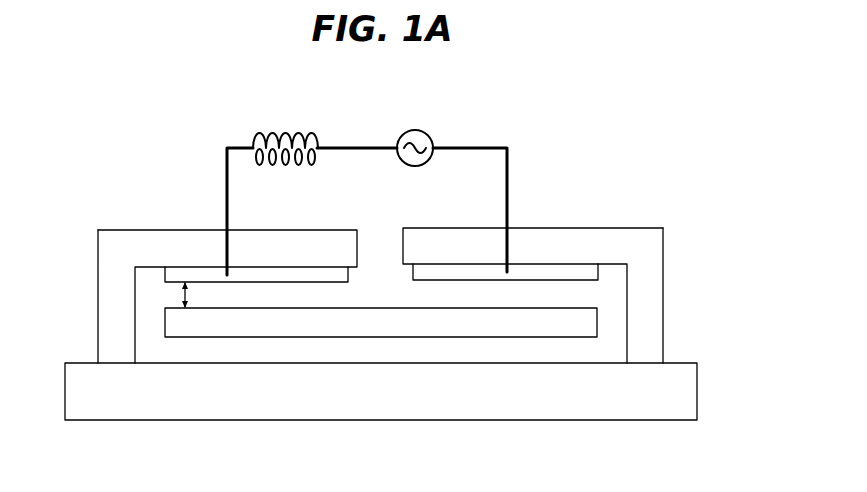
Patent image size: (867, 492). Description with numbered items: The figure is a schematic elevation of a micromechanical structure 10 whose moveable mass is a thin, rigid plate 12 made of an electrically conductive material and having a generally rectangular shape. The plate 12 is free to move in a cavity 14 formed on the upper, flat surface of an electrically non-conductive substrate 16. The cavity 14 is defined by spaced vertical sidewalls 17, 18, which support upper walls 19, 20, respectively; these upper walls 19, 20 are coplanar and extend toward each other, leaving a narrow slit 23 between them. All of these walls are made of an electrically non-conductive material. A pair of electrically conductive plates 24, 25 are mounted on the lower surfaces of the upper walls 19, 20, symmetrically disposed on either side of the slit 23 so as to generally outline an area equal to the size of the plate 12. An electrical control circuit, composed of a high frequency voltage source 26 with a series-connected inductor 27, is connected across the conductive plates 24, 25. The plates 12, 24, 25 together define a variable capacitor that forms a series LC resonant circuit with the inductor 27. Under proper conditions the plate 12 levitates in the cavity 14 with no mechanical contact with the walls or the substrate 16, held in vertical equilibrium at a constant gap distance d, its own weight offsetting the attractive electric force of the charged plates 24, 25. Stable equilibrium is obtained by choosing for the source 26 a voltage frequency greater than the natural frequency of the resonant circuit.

The micromechanical structure 10 is at (543, 93).
The plate 12 is at (598, 318).
The cavity 14 is at (612, 344).
The substrate 16 is at (617, 408).
The vertical sidewall 17 is at (97, 265).
The vertical sidewall 18 is at (650, 273).
The upper wall 19 is at (182, 237).
The upper wall 20 is at (605, 228).
The slit 23 is at (385, 238).
The electrically conductive plate 24 is at (318, 267).
The electrically conductive plate 25 is at (541, 272).
The high frequency voltage source 26 is at (423, 130).
The inductor 27 is at (283, 133).
The gap distance d is at (182, 296).